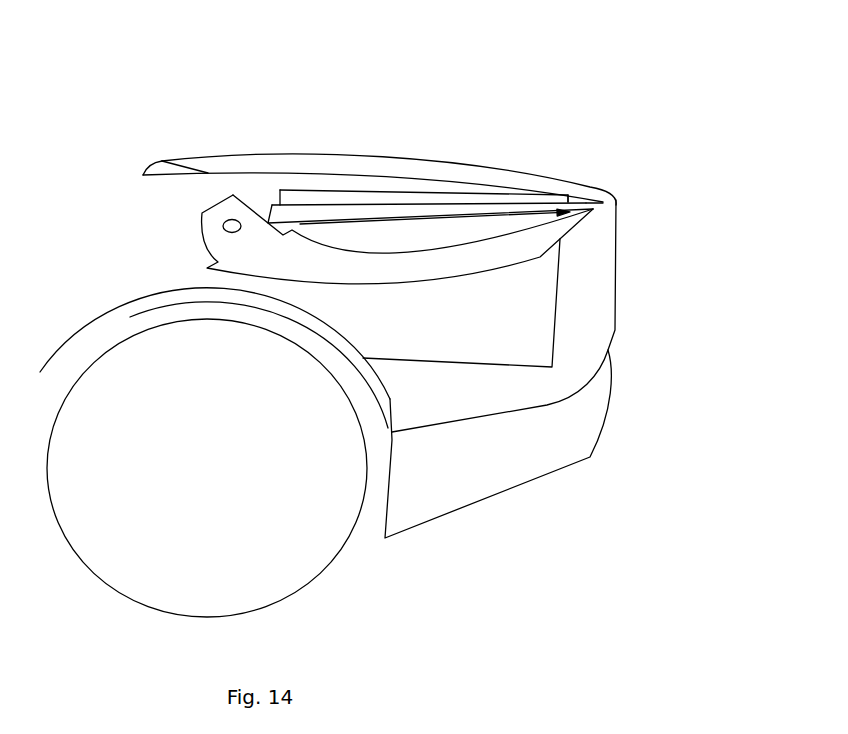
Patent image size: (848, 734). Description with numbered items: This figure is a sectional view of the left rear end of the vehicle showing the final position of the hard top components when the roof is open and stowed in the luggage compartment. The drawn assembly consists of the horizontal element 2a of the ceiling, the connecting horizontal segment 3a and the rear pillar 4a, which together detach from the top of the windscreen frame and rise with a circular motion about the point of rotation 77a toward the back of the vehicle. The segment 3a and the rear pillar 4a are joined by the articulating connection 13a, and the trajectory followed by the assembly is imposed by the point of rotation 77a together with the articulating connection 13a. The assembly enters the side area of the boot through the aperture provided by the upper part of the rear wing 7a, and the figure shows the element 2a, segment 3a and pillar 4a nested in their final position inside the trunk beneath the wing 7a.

The rear wing 7a is at (217, 147).
The connecting horizontal segment 3a is at (444, 205).
The articulating connection 13a is at (599, 202).
The rear pillar 4a is at (486, 250).
The point of rotation 77a is at (210, 223).
The horizontal element 2a is at (486, 303).